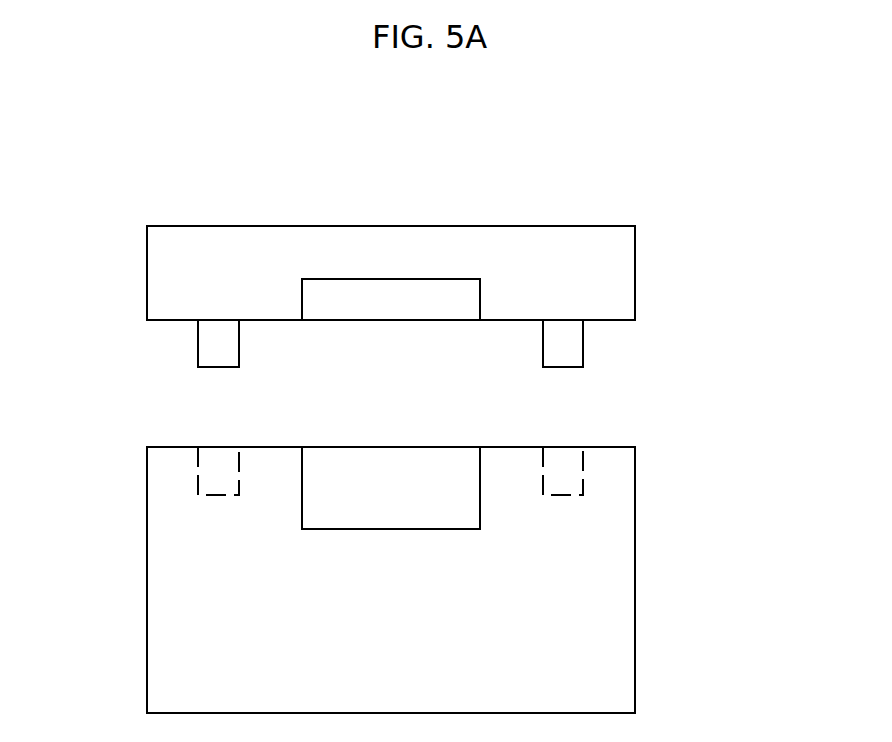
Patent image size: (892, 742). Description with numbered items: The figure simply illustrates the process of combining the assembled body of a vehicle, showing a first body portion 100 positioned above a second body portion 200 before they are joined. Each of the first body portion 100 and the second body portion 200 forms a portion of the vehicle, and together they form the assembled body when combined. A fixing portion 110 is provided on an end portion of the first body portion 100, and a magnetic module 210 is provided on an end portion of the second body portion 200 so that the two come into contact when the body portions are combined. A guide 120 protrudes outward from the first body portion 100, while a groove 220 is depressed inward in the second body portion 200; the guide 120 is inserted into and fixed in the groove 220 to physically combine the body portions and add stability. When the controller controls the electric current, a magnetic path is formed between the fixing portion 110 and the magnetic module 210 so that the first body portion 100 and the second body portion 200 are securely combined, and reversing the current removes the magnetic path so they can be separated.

The first body portion 100 is at (548, 222).
The fixing portion 110 is at (372, 288).
The guide 120 is at (572, 345).
The second body portion 200 is at (640, 640).
The magnetic module 210 is at (332, 508).
The groove 220 is at (583, 480).